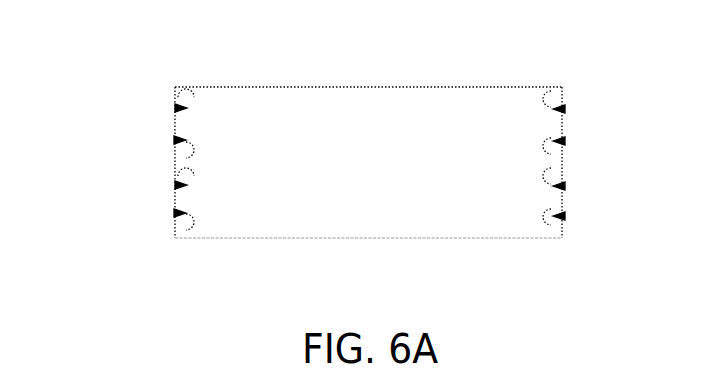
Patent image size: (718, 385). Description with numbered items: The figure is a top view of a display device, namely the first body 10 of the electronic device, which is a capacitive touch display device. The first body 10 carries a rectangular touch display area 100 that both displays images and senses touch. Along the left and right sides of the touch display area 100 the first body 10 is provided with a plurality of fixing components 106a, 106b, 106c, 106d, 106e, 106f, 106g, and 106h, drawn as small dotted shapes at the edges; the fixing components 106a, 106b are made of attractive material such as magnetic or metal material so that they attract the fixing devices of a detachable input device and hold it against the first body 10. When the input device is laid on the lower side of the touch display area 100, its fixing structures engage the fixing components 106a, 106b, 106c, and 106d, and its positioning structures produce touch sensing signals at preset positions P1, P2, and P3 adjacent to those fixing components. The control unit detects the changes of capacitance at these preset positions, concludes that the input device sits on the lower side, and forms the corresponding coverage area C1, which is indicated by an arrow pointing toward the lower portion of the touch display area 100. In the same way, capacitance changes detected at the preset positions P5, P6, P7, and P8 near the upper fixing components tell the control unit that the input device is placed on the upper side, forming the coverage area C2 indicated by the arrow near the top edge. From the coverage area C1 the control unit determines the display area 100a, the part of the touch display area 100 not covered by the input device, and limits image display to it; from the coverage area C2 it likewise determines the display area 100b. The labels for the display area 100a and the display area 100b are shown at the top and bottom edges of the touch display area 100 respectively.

The first body 10 is at (97, 55).
The touch display area 100 is at (478, 100).
The display area 100a is at (397, 100).
The display area 100b is at (397, 225).
The fixing component 106a is at (178, 228).
The fixing component 106b is at (560, 228).
The fixing component 106c is at (176, 172).
The fixing component 106d is at (560, 173).
The fixing component 106e is at (180, 152).
The fixing component 106f is at (560, 152).
The fixing component 106g is at (176, 93).
The fixing component 106h is at (561, 98).
The preset position P1 is at (175, 213).
The preset position P2 is at (564, 216).
The preset position P3 is at (176, 185).
The preset position P5 is at (175, 140).
The preset position P6 is at (564, 141).
The preset position P7 is at (176, 108).
The preset position P8 is at (564, 109).
The coverage area C1 is at (320, 230).
The coverage area C2 is at (320, 95).